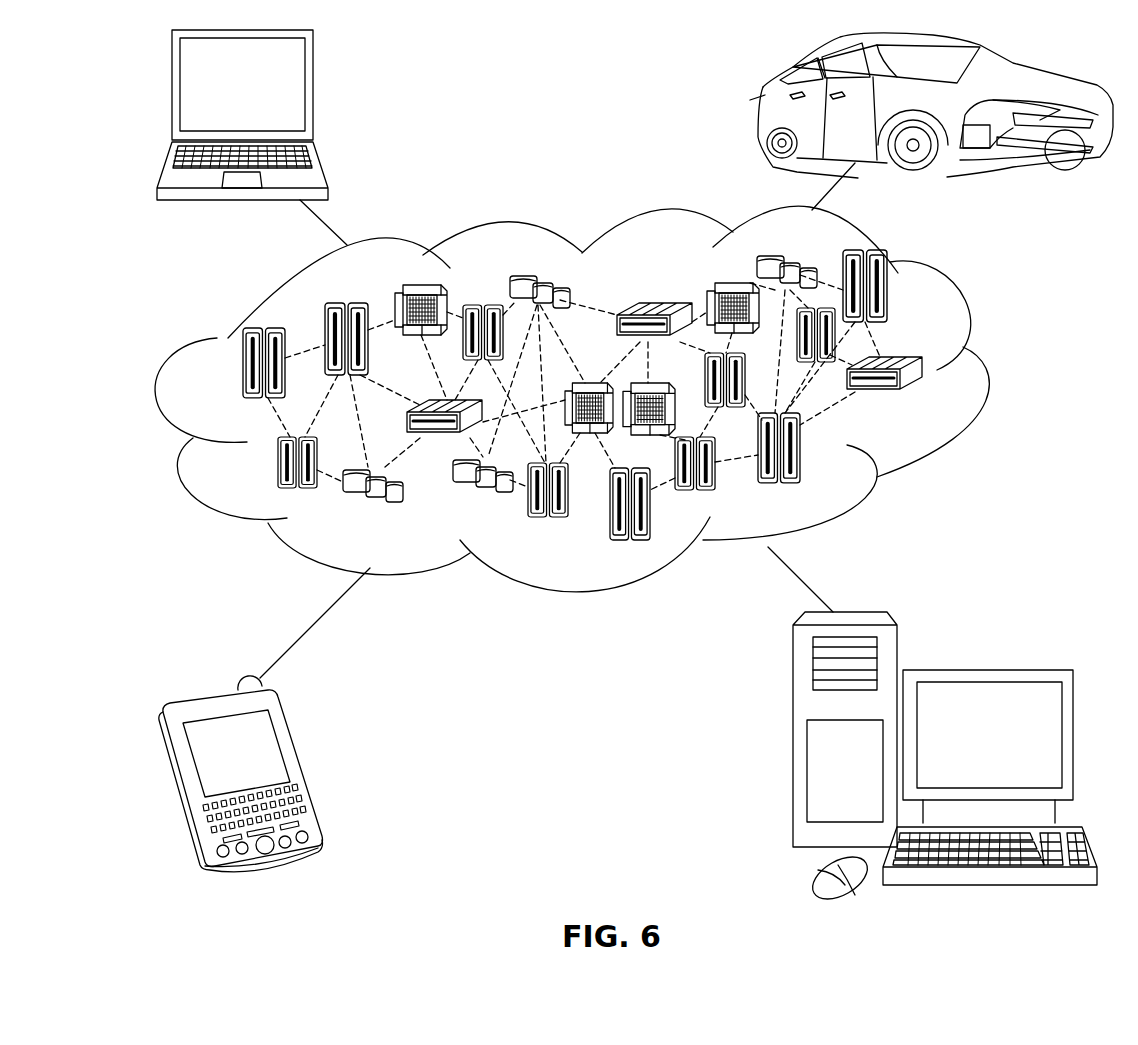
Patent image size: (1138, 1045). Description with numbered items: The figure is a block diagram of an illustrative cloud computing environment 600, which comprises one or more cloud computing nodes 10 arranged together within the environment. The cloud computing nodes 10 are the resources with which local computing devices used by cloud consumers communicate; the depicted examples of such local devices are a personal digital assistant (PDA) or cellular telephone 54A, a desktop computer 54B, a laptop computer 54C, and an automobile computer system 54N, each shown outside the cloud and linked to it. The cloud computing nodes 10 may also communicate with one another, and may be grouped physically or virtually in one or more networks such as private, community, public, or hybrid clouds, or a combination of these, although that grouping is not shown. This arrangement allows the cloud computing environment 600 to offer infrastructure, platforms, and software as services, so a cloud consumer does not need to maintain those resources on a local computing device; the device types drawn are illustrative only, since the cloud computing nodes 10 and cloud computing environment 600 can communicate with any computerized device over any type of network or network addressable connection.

The laptop computer 54C is at (313, 94).
The automobile computer system 54N is at (762, 110).
The personal digital assistant (PDA) or cellular telephone 54A is at (303, 767).
The desktop computer 54B is at (985, 668).
The cloud computing environment 600 is at (613, 399).
The cloud computing nodes 10 is at (928, 406).